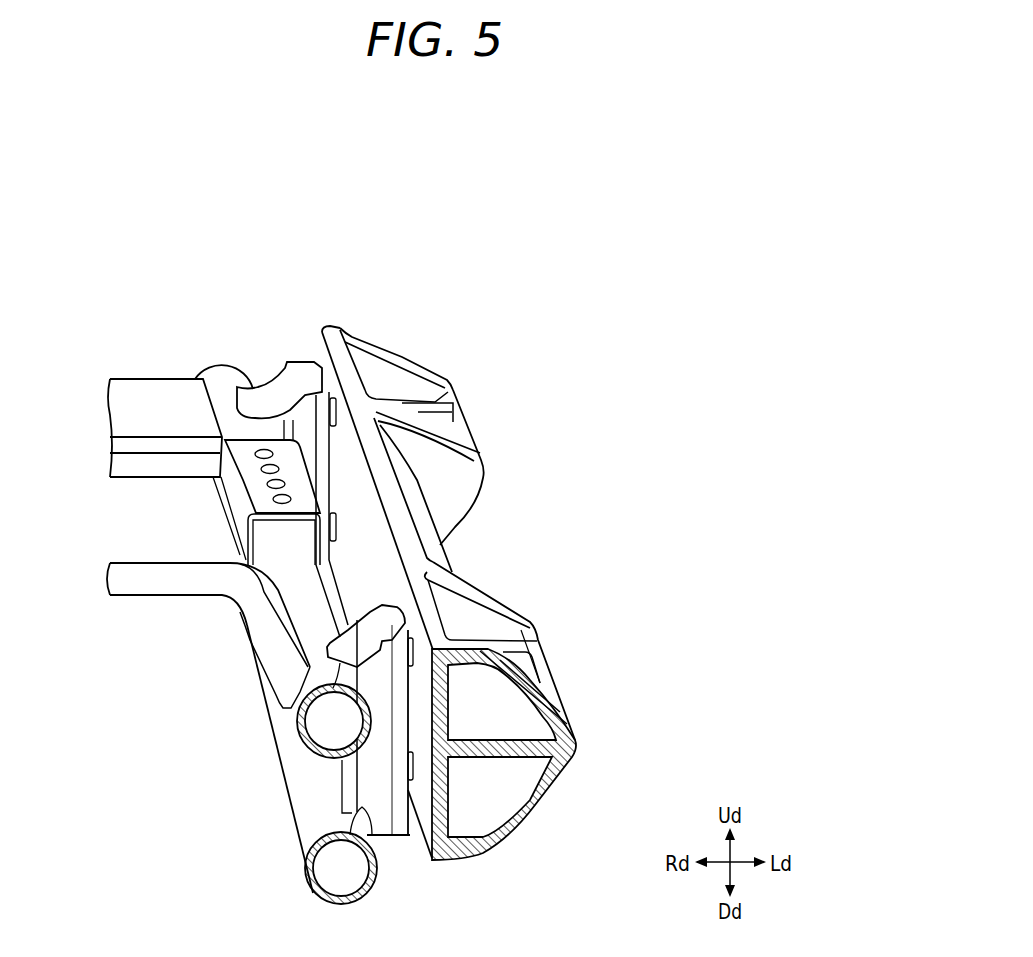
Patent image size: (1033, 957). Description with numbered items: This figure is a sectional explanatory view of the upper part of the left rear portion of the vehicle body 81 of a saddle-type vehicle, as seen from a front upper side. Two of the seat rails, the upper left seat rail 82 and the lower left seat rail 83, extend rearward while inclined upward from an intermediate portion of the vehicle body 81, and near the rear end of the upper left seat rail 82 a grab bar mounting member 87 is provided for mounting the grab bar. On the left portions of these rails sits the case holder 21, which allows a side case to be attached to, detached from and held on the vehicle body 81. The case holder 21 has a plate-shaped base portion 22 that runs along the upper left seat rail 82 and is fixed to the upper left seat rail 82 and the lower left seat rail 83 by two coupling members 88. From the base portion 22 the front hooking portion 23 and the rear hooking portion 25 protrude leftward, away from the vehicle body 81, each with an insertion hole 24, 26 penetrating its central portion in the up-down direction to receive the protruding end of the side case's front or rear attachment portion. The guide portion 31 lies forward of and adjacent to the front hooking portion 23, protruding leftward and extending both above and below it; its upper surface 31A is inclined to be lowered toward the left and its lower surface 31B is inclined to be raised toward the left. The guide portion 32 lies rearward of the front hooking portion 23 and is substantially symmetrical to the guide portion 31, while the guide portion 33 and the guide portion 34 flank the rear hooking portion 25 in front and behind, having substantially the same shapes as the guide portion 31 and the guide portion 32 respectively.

The case holder 21 is at (518, 493).
The base portion 22 is at (397, 530).
The front hooking portion 23 is at (543, 667).
The insertion hole 24 is at (515, 655).
The rear hooking portion 25 is at (458, 413).
The insertion hole 26 is at (436, 417).
The guide portion 31 is at (552, 717).
The upper surface 31A is at (542, 697).
The lower surface 31B is at (537, 813).
The guide portion 32 is at (497, 597).
The guide portion 33 is at (470, 425).
The guide portion 34 is at (400, 347).
The vehicle body 81 is at (192, 726).
The upper left seat rail 82 is at (308, 615).
The lower left seat rail 83 is at (300, 787).
The grab bar mounting member 87 is at (238, 502).
The coupling member 88 is at (292, 363).